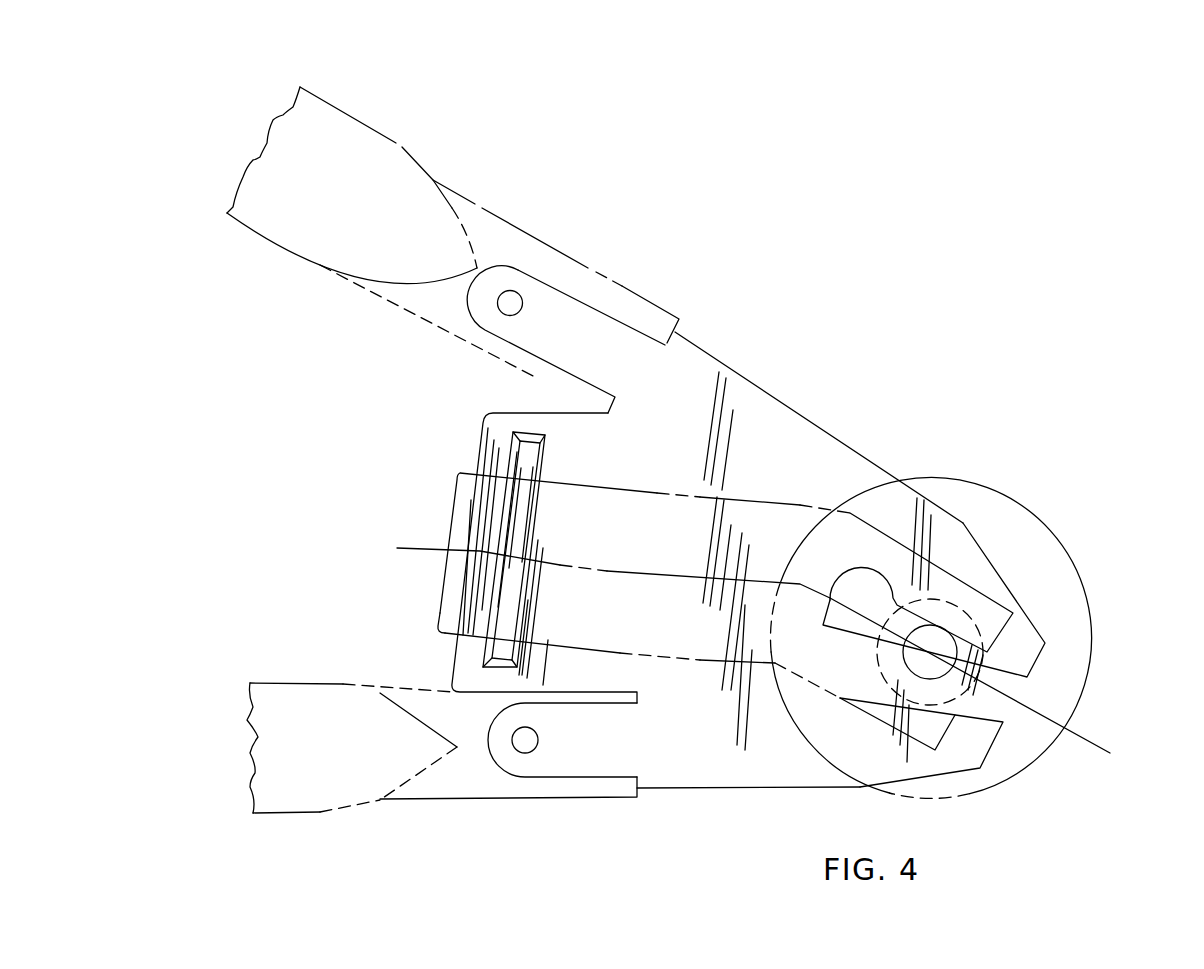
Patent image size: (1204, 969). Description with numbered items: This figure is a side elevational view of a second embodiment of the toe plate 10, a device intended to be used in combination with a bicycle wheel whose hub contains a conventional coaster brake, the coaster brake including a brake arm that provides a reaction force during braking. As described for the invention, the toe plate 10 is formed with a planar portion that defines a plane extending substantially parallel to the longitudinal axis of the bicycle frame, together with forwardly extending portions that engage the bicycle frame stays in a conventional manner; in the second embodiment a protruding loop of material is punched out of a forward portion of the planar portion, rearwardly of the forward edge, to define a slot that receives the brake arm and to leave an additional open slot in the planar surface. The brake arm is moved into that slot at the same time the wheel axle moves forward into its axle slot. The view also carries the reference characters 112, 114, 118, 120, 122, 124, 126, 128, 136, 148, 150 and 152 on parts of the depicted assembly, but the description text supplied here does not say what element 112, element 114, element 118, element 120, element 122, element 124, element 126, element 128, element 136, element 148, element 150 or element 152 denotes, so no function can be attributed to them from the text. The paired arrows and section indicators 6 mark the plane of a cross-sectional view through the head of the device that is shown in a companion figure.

The toe plate 10 is at (784, 383).
The cutting head 112 is at (1090, 560).
The disc 114 is at (990, 500).
The frame end 118 is at (458, 477).
The body 120 is at (700, 760).
The upper clip 122 is at (550, 302).
The lower clip 124 is at (553, 760).
The upper handle 126 is at (380, 130).
The lower handle 128 is at (320, 813).
The bracket plate 136 is at (488, 410).
The hatched insert 148 is at (465, 462).
The frame lower corner 150 is at (437, 632).
The slot 152 is at (508, 513).
The section line 6- 6 is at (397, 548).